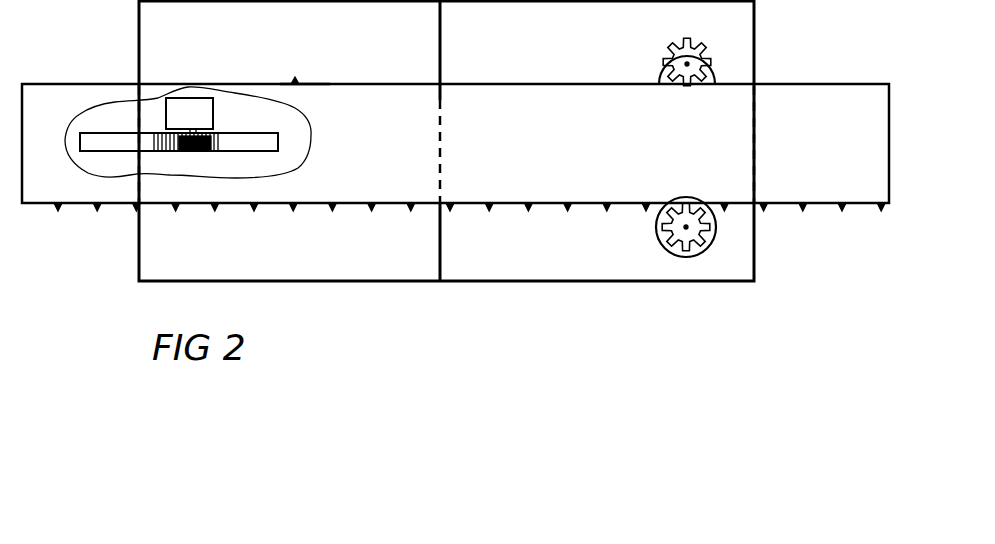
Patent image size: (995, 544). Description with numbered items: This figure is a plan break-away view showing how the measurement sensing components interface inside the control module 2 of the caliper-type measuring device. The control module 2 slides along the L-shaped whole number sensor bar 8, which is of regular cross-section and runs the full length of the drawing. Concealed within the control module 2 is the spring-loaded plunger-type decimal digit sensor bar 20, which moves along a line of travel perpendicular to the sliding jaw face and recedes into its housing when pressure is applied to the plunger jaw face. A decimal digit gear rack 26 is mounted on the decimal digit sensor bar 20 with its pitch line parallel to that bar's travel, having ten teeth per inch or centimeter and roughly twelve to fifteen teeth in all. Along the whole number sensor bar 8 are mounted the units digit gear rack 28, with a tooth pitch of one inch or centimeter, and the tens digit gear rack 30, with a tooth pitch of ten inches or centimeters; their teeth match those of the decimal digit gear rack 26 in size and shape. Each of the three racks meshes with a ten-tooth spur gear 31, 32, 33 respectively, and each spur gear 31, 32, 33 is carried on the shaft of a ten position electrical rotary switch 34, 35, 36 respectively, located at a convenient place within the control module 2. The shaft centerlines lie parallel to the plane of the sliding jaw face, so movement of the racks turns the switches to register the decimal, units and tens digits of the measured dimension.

The control module 2 is at (714, 283).
The whole number sensor bar 8 is at (78, 83).
The decimal digit sensor bar 20 is at (90, 132).
The decimal digit gear rack 26 is at (218, 149).
The units digit gear rack 28 is at (300, 206).
The tens digit gear rack 30 is at (304, 83).
The ten-tooth spur gear 31 is at (208, 140).
The ten-tooth spur gear 32 is at (656, 230).
The ten-tooth spur gear 33 is at (658, 66).
The ten position electrical rotary switch 34 is at (184, 108).
The ten position electrical rotary switch 35 is at (708, 230).
The ten position electrical rotary switch 36 is at (712, 58).